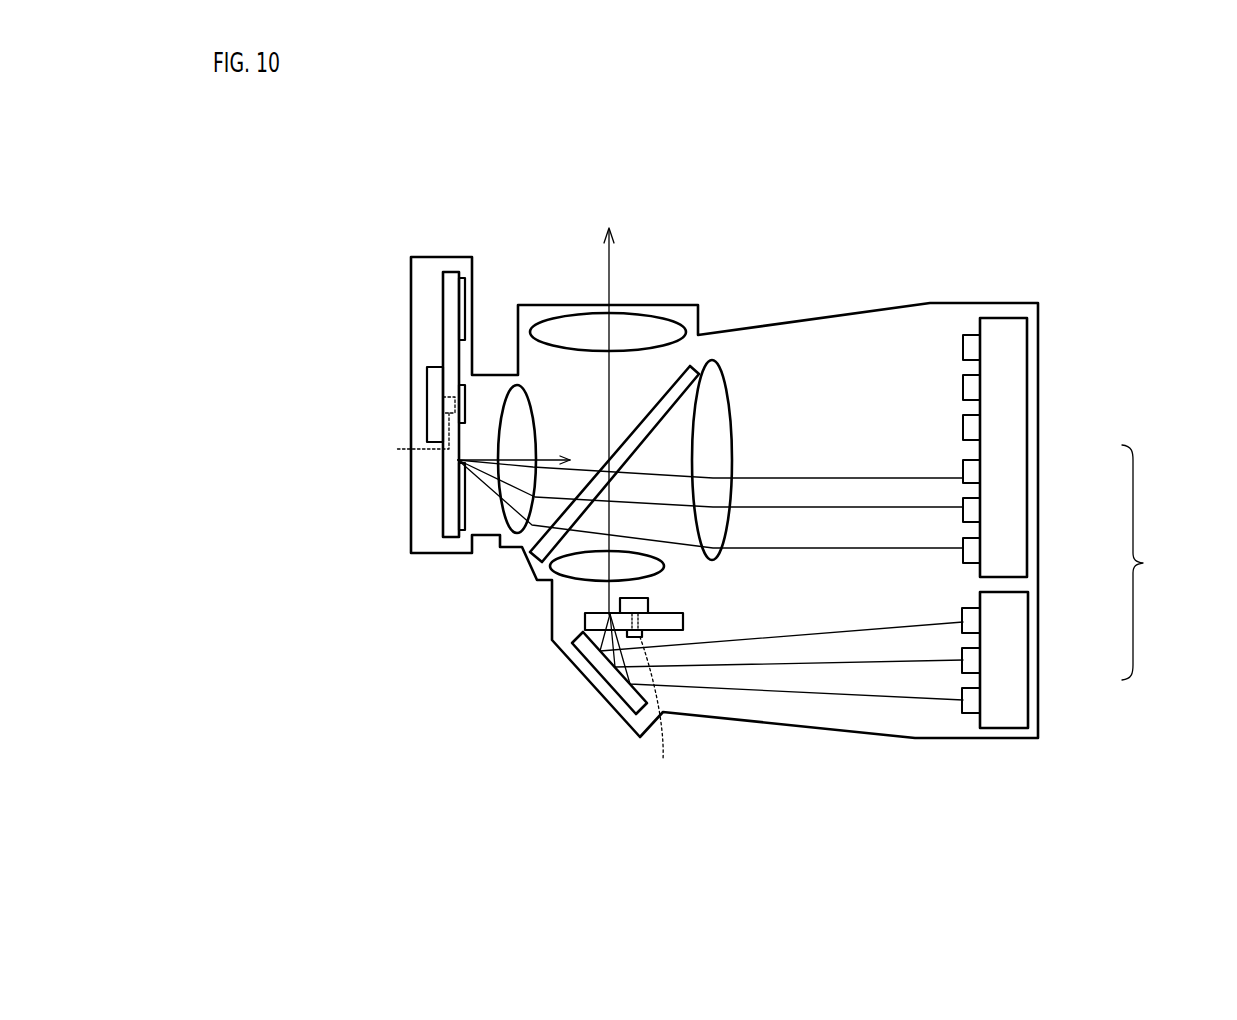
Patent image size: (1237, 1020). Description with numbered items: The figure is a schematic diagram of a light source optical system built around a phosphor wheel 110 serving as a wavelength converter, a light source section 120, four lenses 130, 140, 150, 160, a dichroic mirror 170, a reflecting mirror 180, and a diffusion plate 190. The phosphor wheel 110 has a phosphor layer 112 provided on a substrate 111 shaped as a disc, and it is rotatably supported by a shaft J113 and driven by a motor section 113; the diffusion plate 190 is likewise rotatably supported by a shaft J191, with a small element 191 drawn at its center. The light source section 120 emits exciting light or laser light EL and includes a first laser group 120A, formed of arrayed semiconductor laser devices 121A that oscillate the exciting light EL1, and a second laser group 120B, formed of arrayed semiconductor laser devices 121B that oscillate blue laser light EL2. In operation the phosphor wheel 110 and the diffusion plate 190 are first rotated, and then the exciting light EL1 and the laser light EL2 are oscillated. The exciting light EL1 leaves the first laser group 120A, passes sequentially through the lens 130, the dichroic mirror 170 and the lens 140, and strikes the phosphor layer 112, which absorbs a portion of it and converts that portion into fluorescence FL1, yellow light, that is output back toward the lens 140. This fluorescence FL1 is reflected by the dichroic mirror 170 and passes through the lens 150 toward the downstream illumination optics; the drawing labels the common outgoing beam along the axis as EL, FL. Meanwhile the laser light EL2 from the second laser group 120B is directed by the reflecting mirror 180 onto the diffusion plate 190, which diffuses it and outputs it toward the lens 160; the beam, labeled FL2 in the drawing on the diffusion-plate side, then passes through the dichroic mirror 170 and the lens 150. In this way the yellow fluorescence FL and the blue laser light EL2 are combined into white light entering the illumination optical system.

The phosphor wheel 110 is at (416, 273).
The substrate 111 is at (451, 285).
The phosphor layer 112 is at (466, 312).
The motor section 113 is at (435, 412).
The shaft J113 is at (397, 433).
The light source section 120 is at (1154, 562).
The first laser group 120A is at (1039, 447).
The semiconductor laser devices 121A is at (970, 552).
The second laser group 120B is at (1038, 660).
The semiconductor laser devices 121B is at (968, 615).
The lens 130 is at (725, 380).
The lens 140 is at (510, 513).
The lens 150 is at (650, 325).
The lens 160 is at (553, 578).
The dichroic mirror 170 is at (697, 367).
The reflecting mirror 180 is at (607, 673).
The diffusion plate 190 is at (667, 620).
The detector element 191 is at (645, 602).
The shaft J191 is at (664, 715).
The emission/optical axis light EL, FL is at (606, 258).
The fluorescence FL1 is at (577, 455).
The second focusing light FL2 is at (605, 600).
The exciting light EL1 is at (932, 550).
The laser light EL2 is at (867, 698).